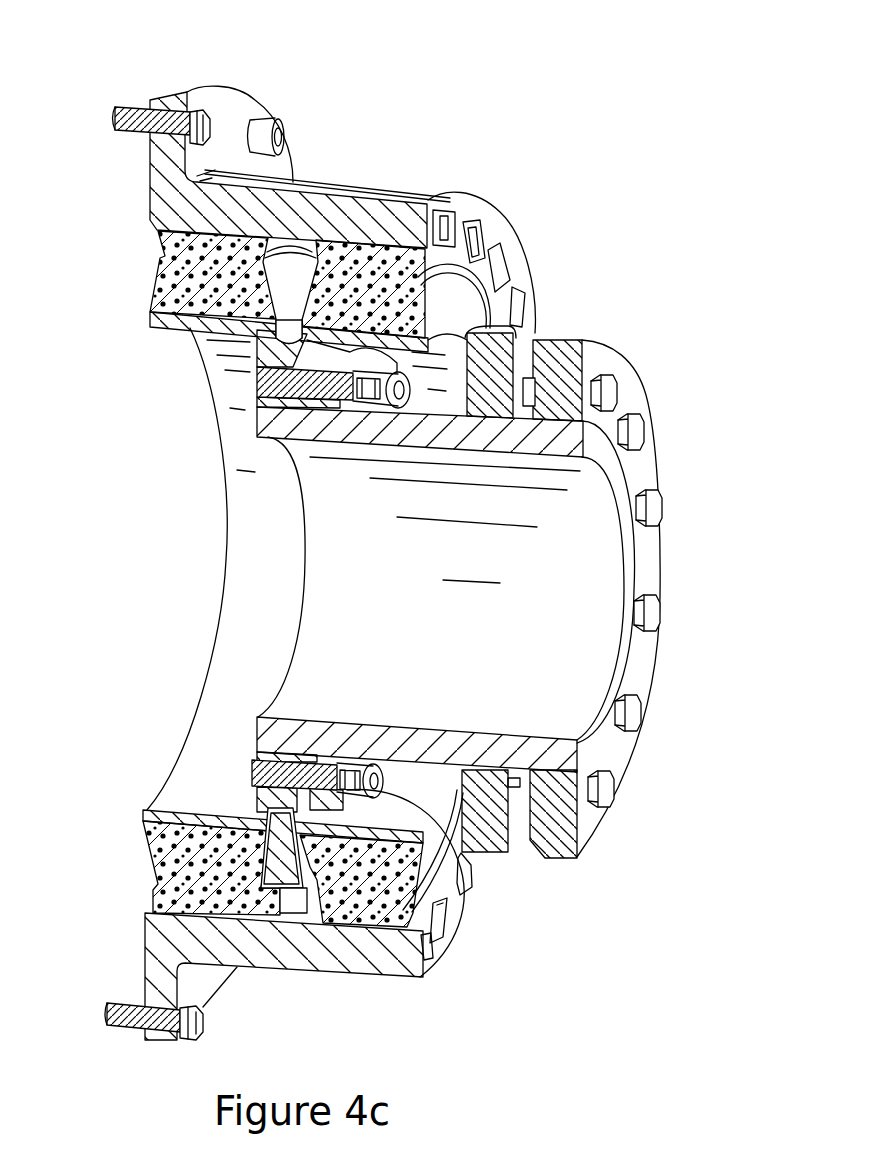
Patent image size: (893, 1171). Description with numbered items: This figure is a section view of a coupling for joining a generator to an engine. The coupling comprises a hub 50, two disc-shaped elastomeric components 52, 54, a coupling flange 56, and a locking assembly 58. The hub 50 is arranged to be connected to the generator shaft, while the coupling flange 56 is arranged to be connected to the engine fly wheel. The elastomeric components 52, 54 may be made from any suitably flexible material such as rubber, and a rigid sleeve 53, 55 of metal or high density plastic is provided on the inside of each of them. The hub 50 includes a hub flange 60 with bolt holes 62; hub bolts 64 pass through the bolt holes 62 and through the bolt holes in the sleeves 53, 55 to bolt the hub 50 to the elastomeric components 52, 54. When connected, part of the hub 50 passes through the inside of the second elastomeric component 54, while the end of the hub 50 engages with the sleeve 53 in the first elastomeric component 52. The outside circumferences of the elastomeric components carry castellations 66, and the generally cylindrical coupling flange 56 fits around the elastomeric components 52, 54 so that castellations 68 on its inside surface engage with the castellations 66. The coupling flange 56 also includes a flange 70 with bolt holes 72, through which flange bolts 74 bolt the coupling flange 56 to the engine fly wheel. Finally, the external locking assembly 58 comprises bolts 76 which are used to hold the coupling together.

The hub 50 is at (553, 648).
The elastomeric component 52 is at (193, 282).
The sleeve 53 is at (238, 596).
The elastomeric component 54 is at (382, 280).
The sleeve 55 is at (423, 797).
The coupling flange 56 is at (355, 193).
The locking assembly 58 is at (563, 372).
The hub flange 60 is at (422, 813).
The bolt holes 62 is at (322, 803).
The hub bolts 64 is at (423, 818).
The castellations 66 is at (467, 238).
The castellations 68 is at (510, 288).
The flange 70 is at (248, 118).
The bolt holes 72 is at (178, 88).
The flange bolts 74 is at (125, 108).
The bolts 76 is at (640, 432).